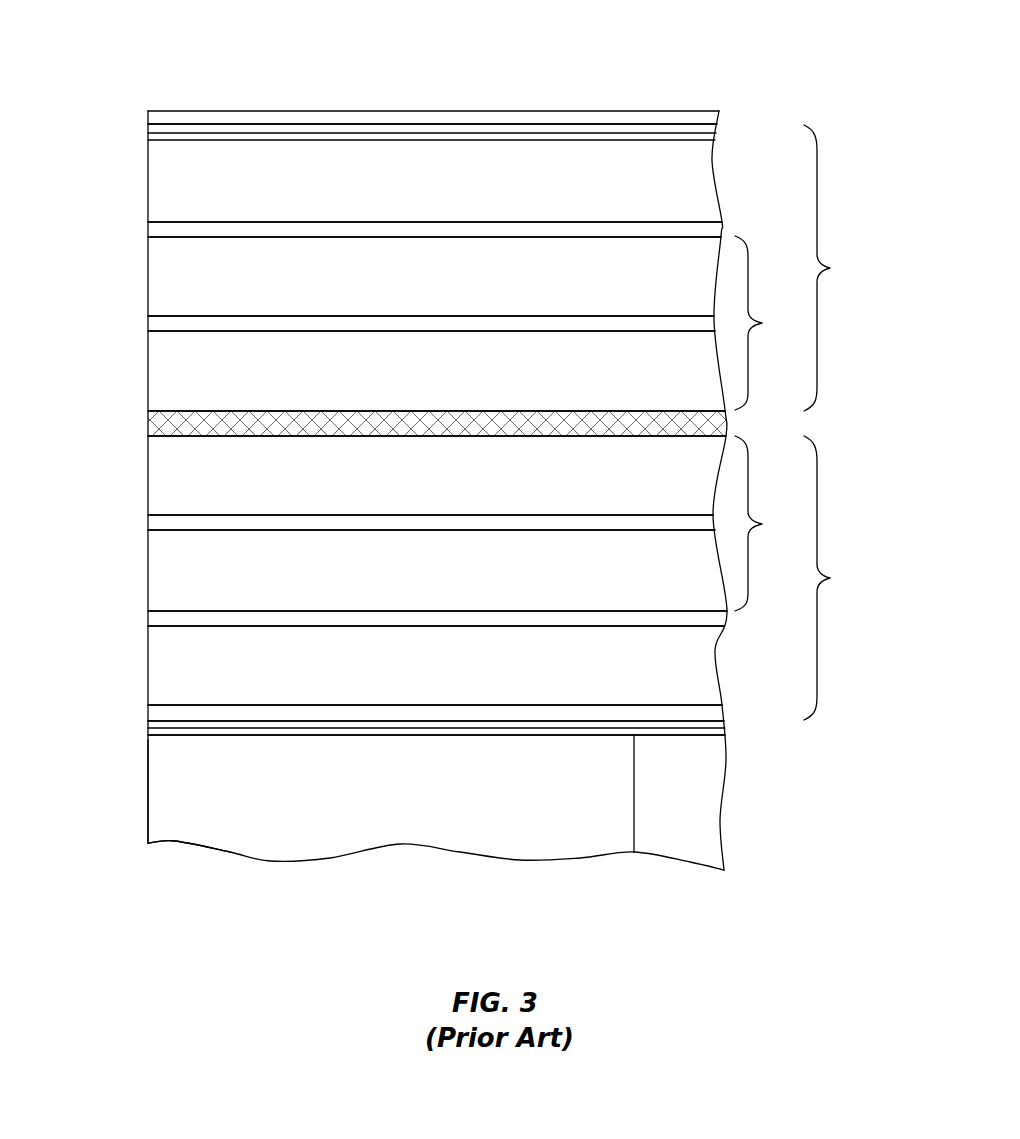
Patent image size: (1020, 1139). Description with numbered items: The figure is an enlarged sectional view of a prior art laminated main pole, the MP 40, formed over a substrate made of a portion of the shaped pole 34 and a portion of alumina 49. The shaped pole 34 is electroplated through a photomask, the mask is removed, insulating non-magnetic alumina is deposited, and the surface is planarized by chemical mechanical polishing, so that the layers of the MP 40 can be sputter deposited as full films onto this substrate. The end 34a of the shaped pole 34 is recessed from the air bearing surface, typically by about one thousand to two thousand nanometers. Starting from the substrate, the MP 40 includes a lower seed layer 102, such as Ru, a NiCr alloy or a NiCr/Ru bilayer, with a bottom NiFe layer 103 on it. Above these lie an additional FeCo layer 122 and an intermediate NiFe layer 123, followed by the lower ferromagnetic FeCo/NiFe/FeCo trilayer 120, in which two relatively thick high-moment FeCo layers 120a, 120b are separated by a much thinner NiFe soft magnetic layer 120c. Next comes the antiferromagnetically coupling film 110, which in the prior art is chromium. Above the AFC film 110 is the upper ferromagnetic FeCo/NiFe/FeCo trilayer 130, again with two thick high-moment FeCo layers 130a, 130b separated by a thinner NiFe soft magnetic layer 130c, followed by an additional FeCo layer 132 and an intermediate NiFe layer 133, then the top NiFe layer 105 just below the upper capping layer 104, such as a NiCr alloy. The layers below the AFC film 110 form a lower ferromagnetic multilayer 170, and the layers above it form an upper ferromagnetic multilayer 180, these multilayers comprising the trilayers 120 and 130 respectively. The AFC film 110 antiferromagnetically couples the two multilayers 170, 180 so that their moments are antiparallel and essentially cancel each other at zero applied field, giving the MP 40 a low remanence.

The laminated main pole 40 is at (745, 80).
The upper capping layer 104 is at (152, 117).
The top NiFe layer 105 is at (152, 133).
The additional FeCo layer 132 is at (152, 181).
The intermediate NiFe layer 133 is at (152, 228).
The high-moment FeCo layer 130b is at (152, 275).
The NiFe soft magnetic layer 130c is at (152, 323).
The high-moment FeCo layer 130a is at (152, 372).
The antiferromagnetically coupling film 110 is at (152, 423).
The high-moment FeCo layer 120a is at (152, 470).
The NiFe soft magnetic layer 120c is at (152, 522).
The high-moment FeCo layer 120b is at (152, 570).
The intermediate NiFe layer 123 is at (152, 618).
The additional FeCo layer 122 is at (152, 683).
The bottom NiFe layer 103 is at (152, 712).
The lower seed layer 102 is at (152, 728).
The shaped pole 34 is at (712, 800).
The end of shaped pole 34a is at (632, 803).
The alumina portion 49 is at (217, 833).
The upper ferromagnetic FeCo/NiFe/FeCo trilayer 130 is at (769, 323).
The lower ferromagnetic FeCo/NiFe/FeCo trilayer 120 is at (769, 523).
The upper ferromagnetic multilayer 180 is at (839, 268).
The lower ferromagnetic multilayer 170 is at (839, 578).